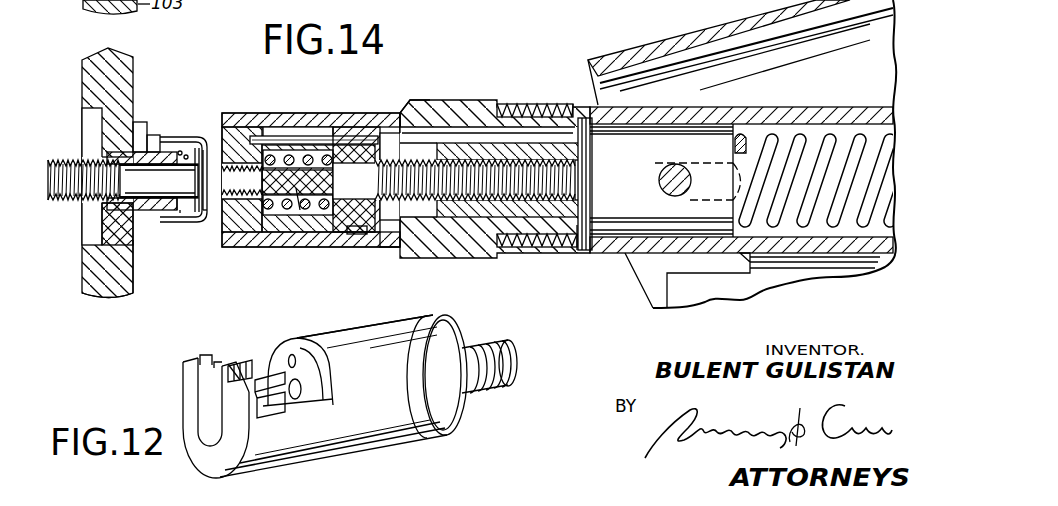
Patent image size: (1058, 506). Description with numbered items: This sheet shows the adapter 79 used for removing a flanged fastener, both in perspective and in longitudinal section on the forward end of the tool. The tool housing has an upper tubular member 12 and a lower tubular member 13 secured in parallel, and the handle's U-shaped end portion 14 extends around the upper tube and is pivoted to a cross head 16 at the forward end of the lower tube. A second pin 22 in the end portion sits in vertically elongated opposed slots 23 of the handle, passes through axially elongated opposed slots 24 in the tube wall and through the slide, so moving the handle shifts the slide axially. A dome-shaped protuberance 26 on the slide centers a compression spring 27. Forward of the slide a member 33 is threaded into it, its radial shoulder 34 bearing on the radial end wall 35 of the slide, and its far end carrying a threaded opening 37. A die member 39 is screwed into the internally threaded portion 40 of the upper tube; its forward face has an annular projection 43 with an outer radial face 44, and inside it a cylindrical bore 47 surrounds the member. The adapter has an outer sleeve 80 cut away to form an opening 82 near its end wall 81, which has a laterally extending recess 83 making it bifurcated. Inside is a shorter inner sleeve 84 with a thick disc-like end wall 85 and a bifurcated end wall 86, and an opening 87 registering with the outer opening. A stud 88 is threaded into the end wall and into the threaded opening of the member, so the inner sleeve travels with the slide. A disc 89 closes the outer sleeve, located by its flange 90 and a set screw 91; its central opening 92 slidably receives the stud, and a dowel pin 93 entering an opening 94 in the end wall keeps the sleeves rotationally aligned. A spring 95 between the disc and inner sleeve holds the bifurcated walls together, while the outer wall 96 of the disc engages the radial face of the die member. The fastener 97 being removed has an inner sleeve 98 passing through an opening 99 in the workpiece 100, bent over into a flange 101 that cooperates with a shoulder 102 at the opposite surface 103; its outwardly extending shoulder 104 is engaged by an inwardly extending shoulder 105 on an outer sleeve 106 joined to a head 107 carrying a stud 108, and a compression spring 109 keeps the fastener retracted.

In FIG. 14, the upper tubular member 12 is at (622, 255).
In FIG. 14, the lower tubular member 13 is at (877, 286).
In FIG. 14, the U-shaped end portion 14 is at (740, 52).
In FIG. 14, the cross head 16 is at (702, 305).
In FIG. 14, the second pin 22 is at (659, 180).
In FIG. 14, the vertically elongated opposed slots 23 is at (661, 160).
In FIG. 14, the opposed slots 24 is at (692, 198).
In FIG. 14, the dome-shaped protuberance 26 is at (752, 155).
In FIG. 14, the compression spring 27 is at (883, 142).
In FIG. 14, the member 33 is at (550, 143).
In FIG. 14, the radial shoulder 34 is at (590, 207).
In FIG. 14, the radial end wall 35 is at (588, 252).
In FIG. 14, the threaded opening 37 is at (510, 170).
In FIG. 14, the die member 39 is at (453, 266).
In FIG. 14, the internally threaded portion 40 is at (522, 254).
In FIG. 14, the annular projection 43 is at (405, 114).
In FIG. 14, the outer radial face 44 is at (390, 122).
In FIG. 14, the cylindrical bore 47 is at (560, 228).
In FIG. 14, the adapter 79 is at (275, 110).
In FIG. 12, the adapter 79 is at (392, 448).
In FIG. 14, the outer sleeve 80 is at (333, 115).
In FIG. 12, the outer sleeve 80 is at (376, 328).
In FIG. 14, the end wall 81 is at (158, 140).
In FIG. 12, the end wall 81 is at (188, 398).
In FIG. 12, the opening 82 is at (262, 372).
In FIG. 14, the laterally extending recess 83 is at (140, 122).
In FIG. 12, the laterally extending recess 83 is at (205, 355).
In FIG. 14, the inner sleeve 84 is at (226, 214).
In FIG. 12, the inner sleeve 84 is at (272, 409).
In FIG. 14, the disc-like end wall 85 is at (265, 240).
In FIG. 12, the disc-like end wall 85 is at (307, 366).
In FIG. 14, the end wall 86 is at (153, 135).
In FIG. 12, the end wall 86 is at (218, 362).
In FIG. 14, the opening 87 is at (212, 178).
In FIG. 12, the opening 87 is at (327, 378).
In FIG. 14, the stud 88 is at (276, 209).
In FIG. 12, the stud 88 is at (480, 346).
In FIG. 14, the disc 89 is at (332, 226).
In FIG. 14, the flange 90 is at (380, 246).
In FIG. 12, the flange 90 is at (465, 393).
In FIG. 14, the set screw 91 is at (355, 236).
In FIG. 14, the opening 92 is at (345, 160).
In FIG. 14, the dowel pin 93 is at (288, 140).
In FIG. 14, the opening 94 is at (240, 140).
In FIG. 12, the opening 94 is at (292, 355).
In FIG. 14, the spring 95 is at (310, 209).
In FIG. 14, the outer wall 96 is at (398, 248).
In FIG. 14, the fastener 97 is at (47, 208).
In FIG. 14, the inner sleeve 98 is at (107, 152).
In FIG. 14, the opening 99 is at (103, 215).
In FIG. 14, the workpiece 100 is at (83, 275).
In FIG. 14, the flange 101 is at (102, 206).
In FIG. 14, the shoulder 102 is at (128, 250).
In FIG. 14, the surface 103 is at (133, 288).
In FIG. 14, the outwardly extending shoulder 104 is at (178, 215).
In FIG. 14, the inwardly extending shoulder 105 is at (166, 148).
In FIG. 14, the outer sleeve 106 is at (184, 215).
In FIG. 14, the head 107 is at (182, 151).
In FIG. 14, the stud 108 is at (55, 160).
In FIG. 14, the compression spring 109 is at (197, 220).